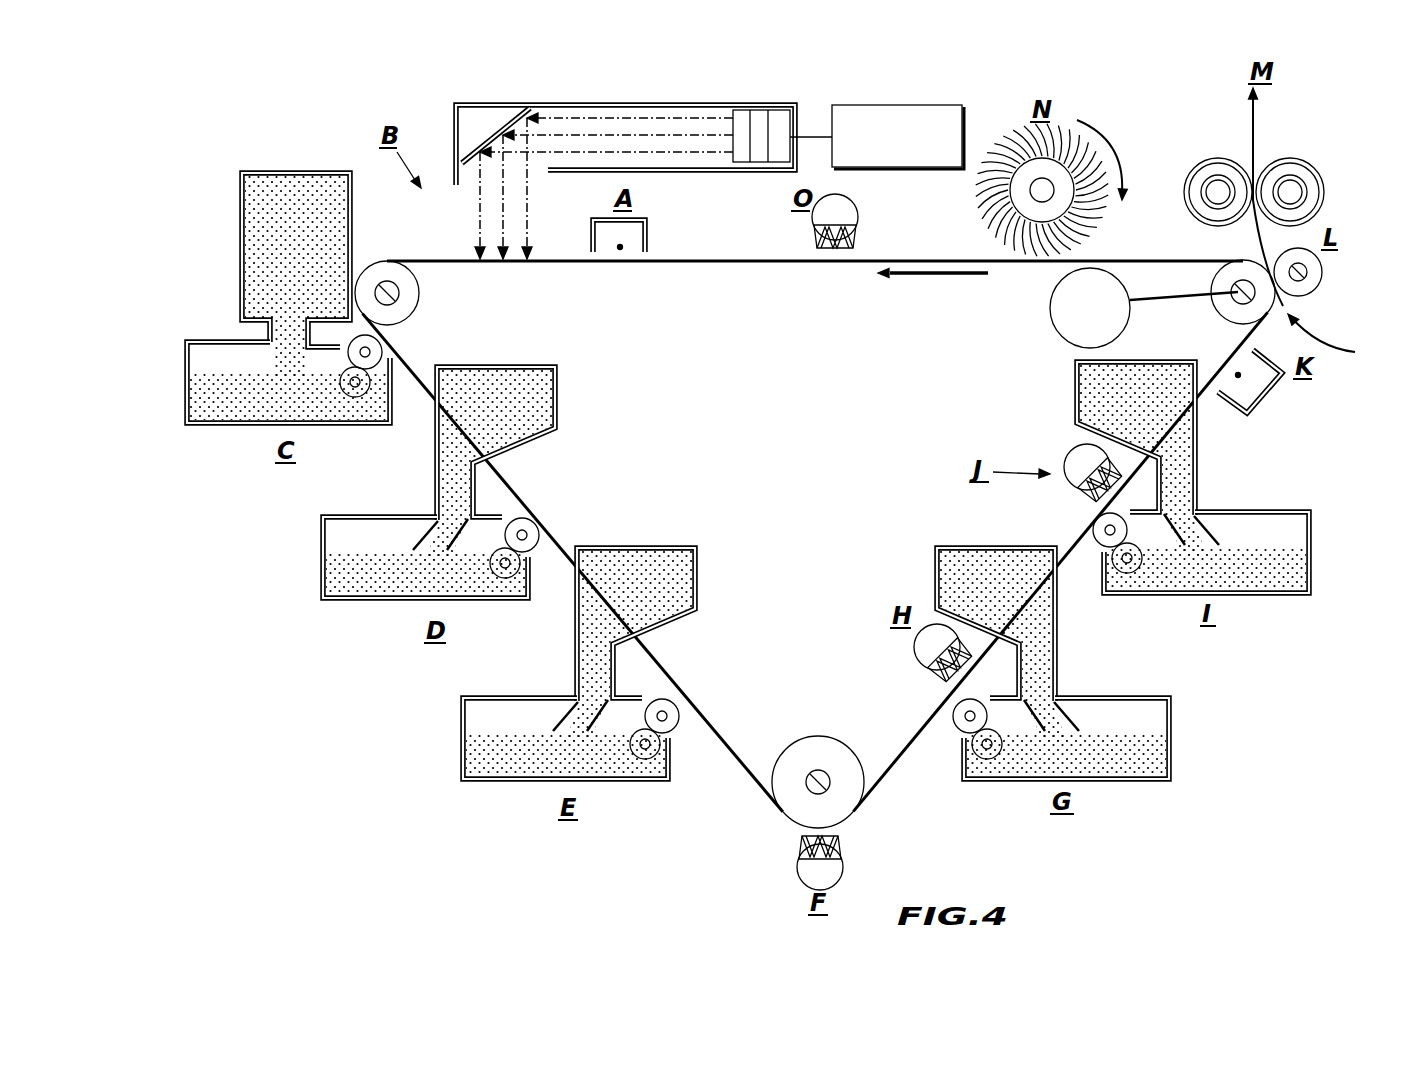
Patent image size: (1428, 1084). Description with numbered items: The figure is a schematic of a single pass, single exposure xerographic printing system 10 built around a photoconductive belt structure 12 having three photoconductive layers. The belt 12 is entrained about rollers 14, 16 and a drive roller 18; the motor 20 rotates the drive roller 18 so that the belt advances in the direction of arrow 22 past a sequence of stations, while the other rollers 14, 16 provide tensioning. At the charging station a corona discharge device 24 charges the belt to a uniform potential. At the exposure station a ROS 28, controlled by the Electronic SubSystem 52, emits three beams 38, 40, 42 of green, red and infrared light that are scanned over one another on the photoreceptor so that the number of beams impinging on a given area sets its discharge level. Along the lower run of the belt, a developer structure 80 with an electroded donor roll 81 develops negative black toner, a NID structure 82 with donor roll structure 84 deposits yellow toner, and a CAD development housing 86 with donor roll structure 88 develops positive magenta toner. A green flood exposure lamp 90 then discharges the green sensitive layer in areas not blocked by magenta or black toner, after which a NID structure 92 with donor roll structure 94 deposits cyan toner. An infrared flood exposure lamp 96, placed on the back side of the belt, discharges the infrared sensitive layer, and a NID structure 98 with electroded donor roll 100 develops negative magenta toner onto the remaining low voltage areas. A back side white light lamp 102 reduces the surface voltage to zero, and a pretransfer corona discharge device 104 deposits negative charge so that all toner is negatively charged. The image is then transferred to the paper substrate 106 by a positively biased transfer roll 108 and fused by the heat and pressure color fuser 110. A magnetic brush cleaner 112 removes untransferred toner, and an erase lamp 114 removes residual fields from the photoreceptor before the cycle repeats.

The xerographic printing system 10 is at (252, 115).
The photoconductive belt structure 12 is at (755, 280).
The roller 14 is at (417, 305).
The roller 16 is at (806, 746).
The drive roller 18 is at (1218, 313).
The motor 20 is at (1050, 308).
The arrow 22 is at (940, 278).
The corona discharge device 24 is at (648, 224).
The ROS 28 is at (437, 99).
The beam 38 is at (530, 213).
The beam 40 is at (502, 185).
The beam 42 is at (478, 225).
The Electronic SubSystem 52 is at (943, 110).
The developer structure 80 is at (243, 217).
The electroded donor roll 81 is at (378, 352).
The NID structure 82 is at (556, 376).
The electroded donor roll structure 84 is at (530, 527).
The CAD development housing 86 is at (698, 560).
The electroded donor roll structure 88 is at (678, 697).
The flood exposure lamp 90 is at (807, 863).
The NID structure 92 is at (932, 565).
The electroded donor roll structure 94 is at (950, 705).
The flood exposure lamp 96 is at (920, 650).
The NID structure 98 is at (1073, 372).
The electroded donor roll 100 is at (1098, 522).
The lamp 102 is at (1073, 458).
The corona discharge device 104 is at (1262, 388).
The paper substrate 106 is at (1253, 232).
The transfer roll 108 is at (1323, 272).
The color fuser 110 is at (1345, 105).
The magnetic brush cleaner 112 is at (1078, 120).
The erase lamp 114 is at (852, 212).